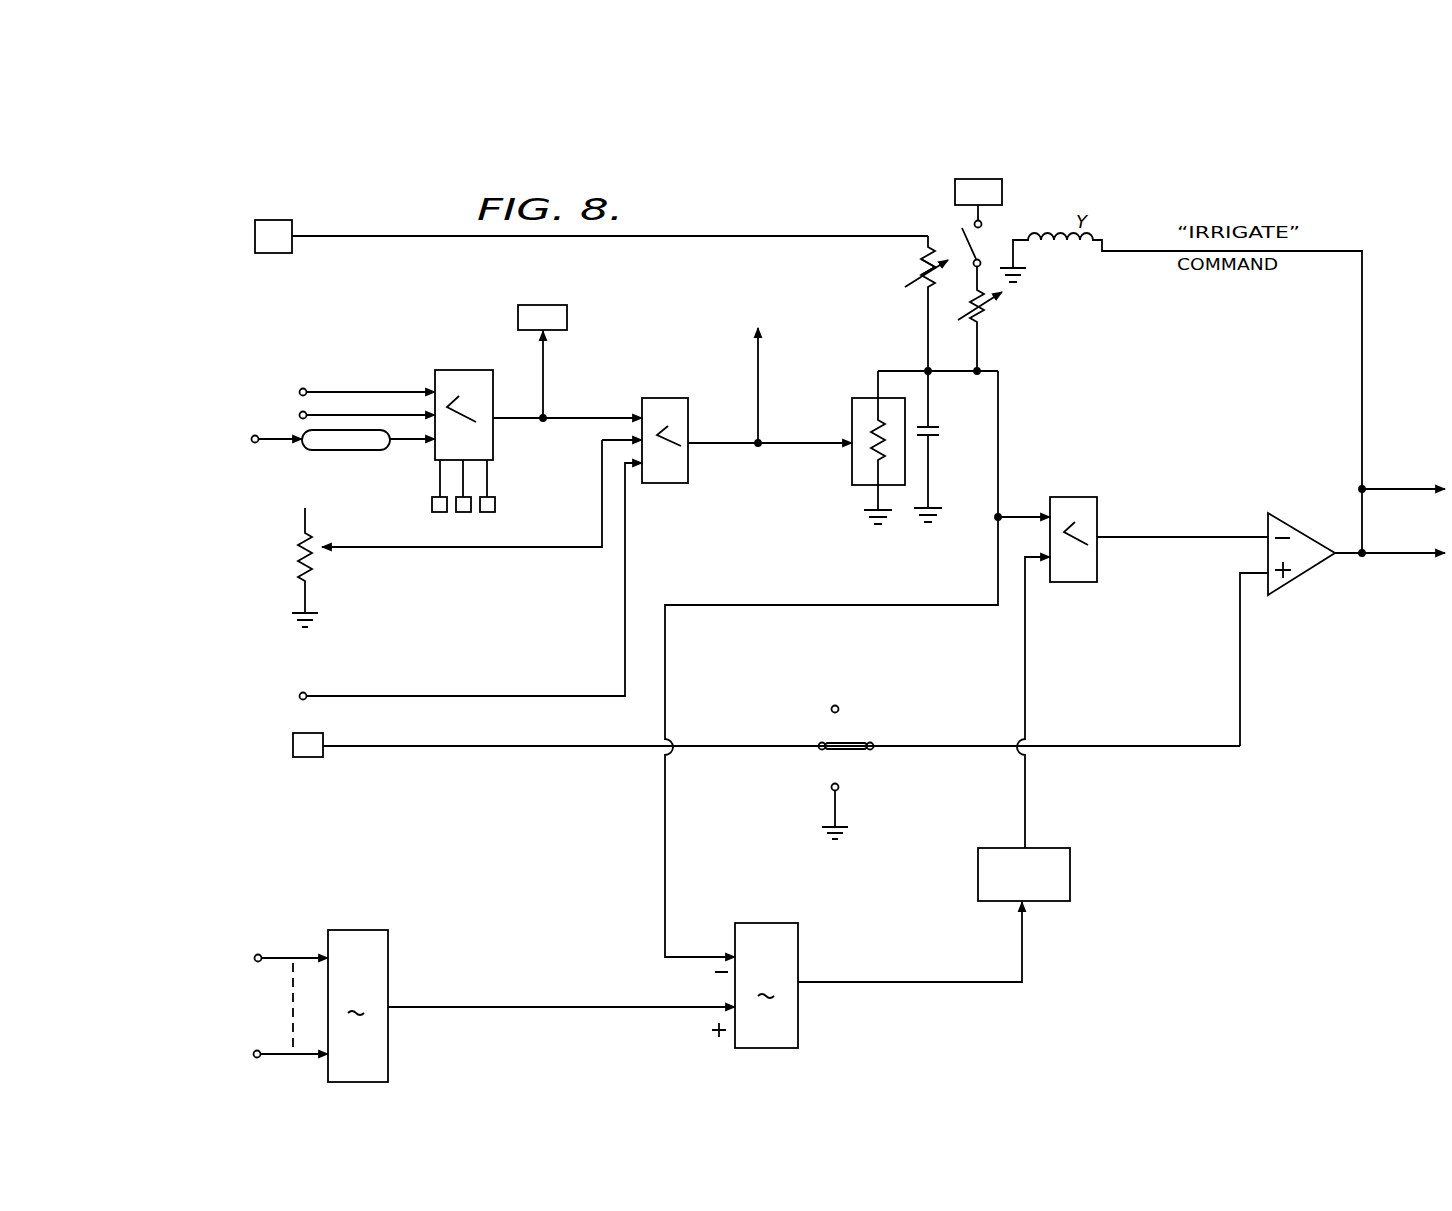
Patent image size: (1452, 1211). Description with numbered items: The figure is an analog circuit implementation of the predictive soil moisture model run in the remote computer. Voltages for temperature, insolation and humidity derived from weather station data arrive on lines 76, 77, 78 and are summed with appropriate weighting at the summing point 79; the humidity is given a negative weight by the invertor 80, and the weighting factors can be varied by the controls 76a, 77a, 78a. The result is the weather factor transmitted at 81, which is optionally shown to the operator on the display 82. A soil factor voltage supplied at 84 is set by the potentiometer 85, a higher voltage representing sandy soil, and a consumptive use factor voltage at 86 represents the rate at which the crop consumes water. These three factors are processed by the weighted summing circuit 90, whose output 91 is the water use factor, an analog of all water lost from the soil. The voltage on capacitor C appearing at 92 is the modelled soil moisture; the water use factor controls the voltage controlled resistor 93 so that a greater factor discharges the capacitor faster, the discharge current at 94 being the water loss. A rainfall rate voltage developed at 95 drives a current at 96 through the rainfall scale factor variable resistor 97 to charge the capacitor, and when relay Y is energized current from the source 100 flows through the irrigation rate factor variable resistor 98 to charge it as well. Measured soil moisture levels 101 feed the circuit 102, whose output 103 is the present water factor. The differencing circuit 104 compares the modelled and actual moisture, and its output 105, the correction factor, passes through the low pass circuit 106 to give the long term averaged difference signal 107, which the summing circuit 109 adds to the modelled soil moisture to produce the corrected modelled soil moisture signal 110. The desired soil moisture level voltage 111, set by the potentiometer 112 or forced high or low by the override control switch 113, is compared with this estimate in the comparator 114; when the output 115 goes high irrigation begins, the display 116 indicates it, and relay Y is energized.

The temperature input line 76 is at (325, 390).
The insolation input line 77 is at (382, 414).
The humidity input line 78 is at (403, 442).
The weighted summing point 79 is at (465, 370).
The invertor 80 is at (335, 451).
The weather factor output 81 is at (512, 417).
The display 82 is at (567, 317).
The soil factor input 84 is at (507, 552).
The potentiometer 85 is at (278, 565).
The consumptive use factor input 86 is at (463, 695).
The weighted summing circuit 90 is at (661, 397).
The water use factor output 91 is at (722, 442).
The modelled soil moisture signal 92 is at (998, 383).
The voltage controlled resistor 93 is at (852, 482).
The water loss discharge current 94 is at (893, 376).
The rainfall rate input 95 is at (280, 253).
The rainfall current path 96 is at (937, 243).
The rainfall scale factor variable resistor 97 is at (920, 254).
The irrigation rate factor variable resistor 98 is at (966, 312).
The source 100 is at (1002, 192).
The soil moisture levels 101 is at (232, 1012).
The present water factor circuit 102 is at (358, 1006).
The present water factor output 103 is at (513, 1006).
The differencing circuit 104 is at (755, 985).
The correction factor output 105 is at (865, 980).
The low pass circuit 106 is at (1070, 878).
The long term averaged difference signal 107 is at (1022, 833).
The summing circuit 109 is at (1097, 503).
The corrected modelled soil moisture signal 110 is at (1185, 535).
The desired soil moisture level voltage 111 is at (1240, 700).
The potentiometer 112 is at (311, 757).
The override control switch 113 is at (870, 735).
The comparator 114 is at (1290, 518).
The comparator output 115 is at (1343, 558).
The display 116 is at (1393, 487).
The temperature weighting control 76a is at (432, 504).
The insolation weighting control 77a is at (458, 512).
The humidity weighting control 78a is at (495, 508).